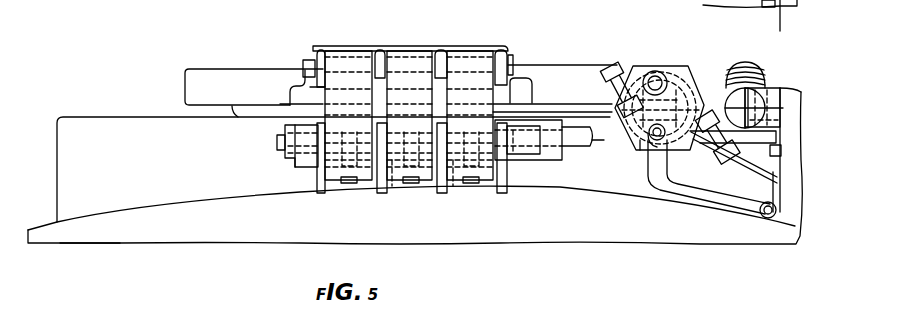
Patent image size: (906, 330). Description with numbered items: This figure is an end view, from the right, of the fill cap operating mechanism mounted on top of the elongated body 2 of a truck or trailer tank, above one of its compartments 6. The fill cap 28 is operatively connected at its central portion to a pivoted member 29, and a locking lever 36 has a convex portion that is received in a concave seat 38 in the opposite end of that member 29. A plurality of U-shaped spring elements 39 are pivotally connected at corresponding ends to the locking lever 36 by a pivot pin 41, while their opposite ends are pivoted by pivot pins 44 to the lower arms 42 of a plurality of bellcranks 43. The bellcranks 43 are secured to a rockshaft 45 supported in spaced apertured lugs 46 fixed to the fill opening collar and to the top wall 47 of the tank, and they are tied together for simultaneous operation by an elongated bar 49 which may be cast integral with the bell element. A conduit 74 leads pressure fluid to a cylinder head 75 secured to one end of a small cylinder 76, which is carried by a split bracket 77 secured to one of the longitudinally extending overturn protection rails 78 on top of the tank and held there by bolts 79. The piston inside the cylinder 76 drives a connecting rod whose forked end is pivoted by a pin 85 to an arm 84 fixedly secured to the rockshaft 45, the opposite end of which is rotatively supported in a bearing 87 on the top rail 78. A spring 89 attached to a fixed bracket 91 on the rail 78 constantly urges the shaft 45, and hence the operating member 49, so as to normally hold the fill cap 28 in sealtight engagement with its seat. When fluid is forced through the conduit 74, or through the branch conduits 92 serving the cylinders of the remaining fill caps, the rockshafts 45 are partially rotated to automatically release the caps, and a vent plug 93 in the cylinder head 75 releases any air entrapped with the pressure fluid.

The elongated body 2 is at (592, 247).
The compartment 6 is at (780, 31).
The fill cap 28 is at (122, 112).
The member 29 is at (214, 80).
The locking lever 36 is at (349, 46).
The concave seat 38 is at (298, 82).
The U-shaped spring elements 39 is at (333, 47).
The pivot pin 41 is at (303, 58).
The lower arms 42 is at (350, 184).
The bellcranks 43 is at (284, 128).
The pivot pins 44 is at (331, 185).
The rockshaft 45 is at (604, 150).
The apertured lugs 46 is at (317, 180).
The top wall 47 is at (180, 205).
The elongated bar 49 is at (514, 158).
The conduit 74 is at (767, 217).
The cylinder head 75 is at (686, 86).
The small cylinder 76 is at (641, 63).
The split bracket 77 is at (740, 168).
The overturn protection rail 78 is at (790, 95).
The bolts 79 is at (620, 66).
The arm 84 is at (668, 76).
The pin 85 is at (706, 94).
The bearing 87 is at (781, 151).
The spring 89 is at (758, 66).
The fixed bracket 91 is at (772, 114).
The branch conduits 92 is at (650, 172).
The vent plug 93 is at (656, 75).